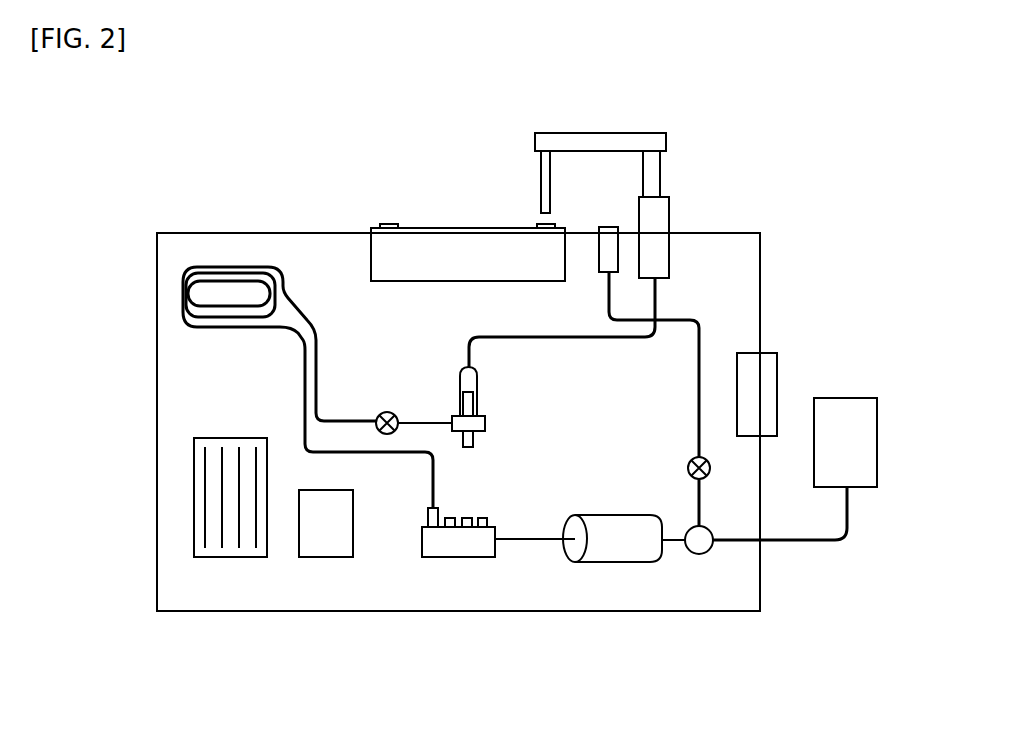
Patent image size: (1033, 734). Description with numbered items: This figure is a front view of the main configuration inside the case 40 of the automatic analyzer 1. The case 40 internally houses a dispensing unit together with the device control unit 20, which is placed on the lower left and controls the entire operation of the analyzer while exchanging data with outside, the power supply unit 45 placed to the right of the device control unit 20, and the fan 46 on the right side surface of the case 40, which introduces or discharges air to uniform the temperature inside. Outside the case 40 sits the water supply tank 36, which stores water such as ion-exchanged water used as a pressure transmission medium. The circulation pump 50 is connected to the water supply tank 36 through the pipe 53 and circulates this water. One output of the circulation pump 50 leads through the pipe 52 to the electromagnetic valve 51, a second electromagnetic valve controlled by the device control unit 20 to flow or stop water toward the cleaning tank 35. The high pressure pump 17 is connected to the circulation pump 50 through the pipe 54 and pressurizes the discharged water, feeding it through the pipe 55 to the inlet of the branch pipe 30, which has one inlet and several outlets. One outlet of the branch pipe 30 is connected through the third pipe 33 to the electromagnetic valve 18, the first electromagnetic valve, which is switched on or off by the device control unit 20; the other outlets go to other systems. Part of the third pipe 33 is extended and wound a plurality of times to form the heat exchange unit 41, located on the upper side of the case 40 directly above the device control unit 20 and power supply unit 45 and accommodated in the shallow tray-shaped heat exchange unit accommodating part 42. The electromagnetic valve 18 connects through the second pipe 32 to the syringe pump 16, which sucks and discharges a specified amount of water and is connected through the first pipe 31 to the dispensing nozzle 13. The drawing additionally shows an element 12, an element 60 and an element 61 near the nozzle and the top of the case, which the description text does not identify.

The automatic analyzer 1 is at (180, 648).
The plate 12 is at (628, 133).
The dispensing nozzle 13 is at (544, 187).
The syringe pump 16 is at (483, 407).
The high pressure pump 17 is at (618, 552).
The electromagnetic valve 18 is at (391, 410).
The device control unit 20 is at (230, 557).
The branch pipe 30 is at (456, 557).
The first pipe 31 is at (615, 340).
The second pipe 32 is at (436, 420).
The third pipe 33 is at (305, 423).
The cleaning tank 35 is at (608, 280).
The water supply tank 36 is at (865, 420).
The case 40 is at (152, 437).
The heat exchange unit 41 is at (183, 283).
The heat exchange unit accommodating part 42 is at (180, 358).
The power supply unit 45 is at (323, 557).
The fan 46 is at (765, 372).
The circulation pump 50 is at (700, 555).
The electromagnetic valve 51 is at (688, 466).
The pipe 52 is at (697, 320).
The pipe 53 is at (803, 540).
The pipe 54 is at (670, 540).
The pipe 55 is at (535, 540).
The nozzle 60 is at (540, 223).
The tank 61 is at (428, 238).